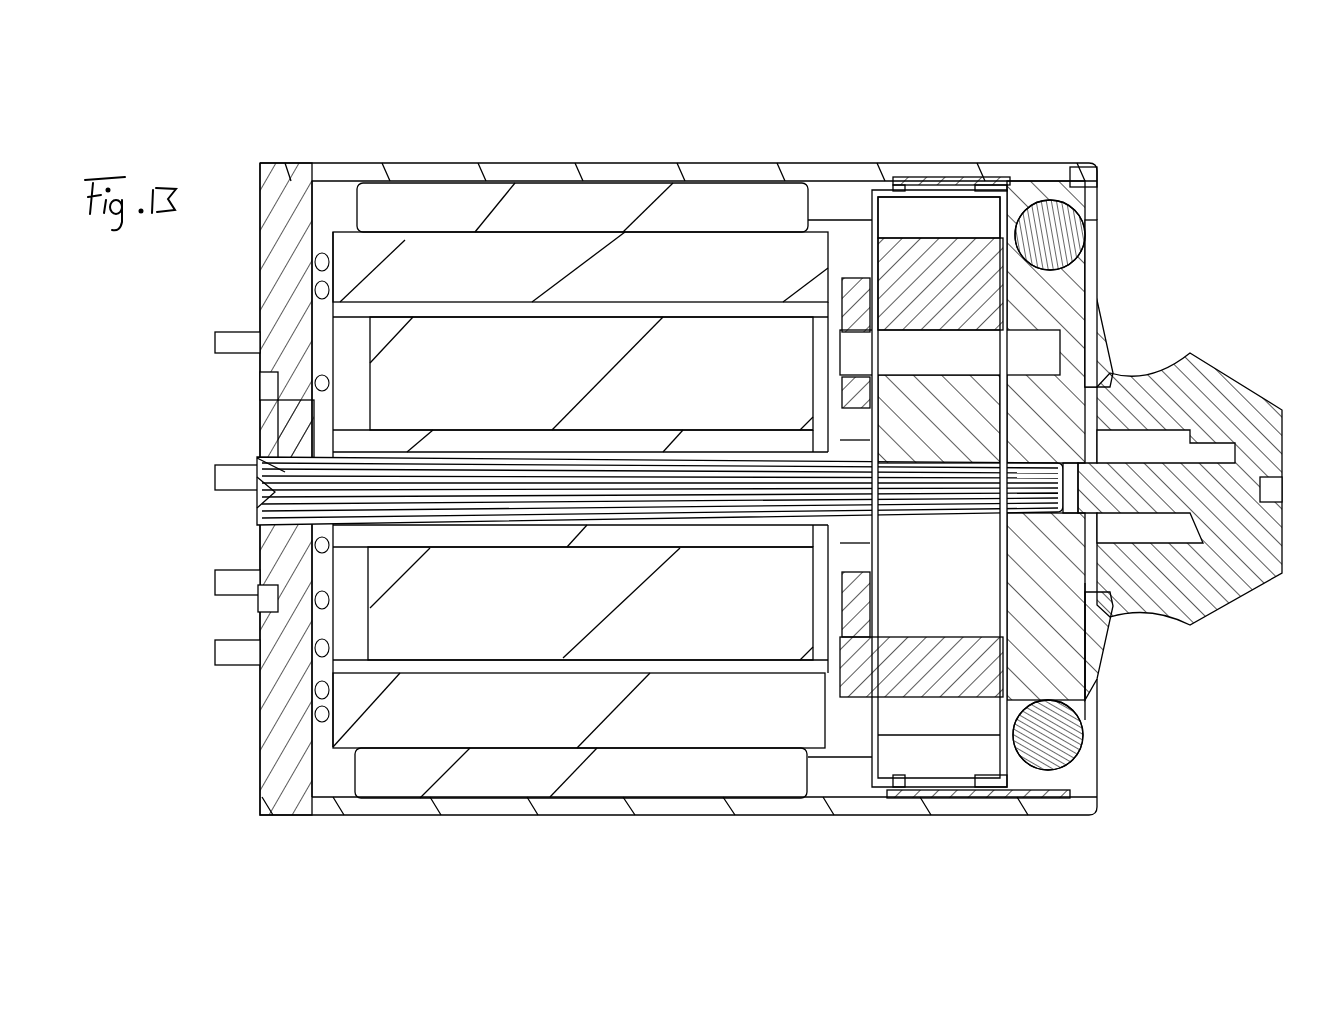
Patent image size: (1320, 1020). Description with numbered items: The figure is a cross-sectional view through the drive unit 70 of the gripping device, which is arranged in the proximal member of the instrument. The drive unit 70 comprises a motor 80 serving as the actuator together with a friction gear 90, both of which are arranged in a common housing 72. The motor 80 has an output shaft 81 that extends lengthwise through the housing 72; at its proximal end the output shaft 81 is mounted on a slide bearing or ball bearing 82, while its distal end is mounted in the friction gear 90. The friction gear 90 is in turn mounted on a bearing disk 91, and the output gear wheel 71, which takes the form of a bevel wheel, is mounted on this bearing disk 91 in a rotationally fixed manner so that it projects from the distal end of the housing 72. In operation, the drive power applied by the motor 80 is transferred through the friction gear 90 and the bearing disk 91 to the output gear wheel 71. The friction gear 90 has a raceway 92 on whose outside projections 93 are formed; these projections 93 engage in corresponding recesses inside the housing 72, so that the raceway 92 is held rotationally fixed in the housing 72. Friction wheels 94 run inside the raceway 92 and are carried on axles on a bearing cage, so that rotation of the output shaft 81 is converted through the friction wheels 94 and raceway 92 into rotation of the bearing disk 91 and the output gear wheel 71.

The drive unit 70 is at (510, 128).
The output gear wheel 71 is at (1218, 372).
The housing 72 is at (605, 167).
The motor 80 is at (441, 262).
The output shaft 81 is at (260, 458).
The slide bearing or ball bearing 82 is at (270, 420).
The friction gear 90 is at (935, 195).
The bearing disk 91 is at (1073, 307).
The raceway 92 is at (872, 200).
The projections 93 is at (905, 188).
The friction wheels 94 is at (963, 260).